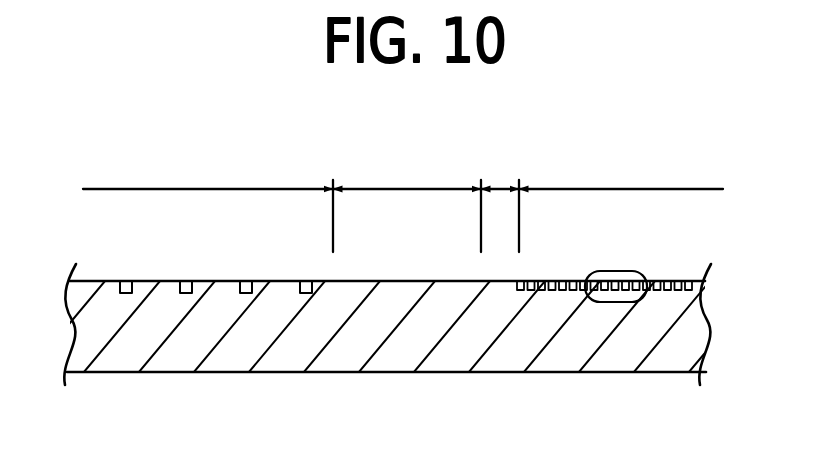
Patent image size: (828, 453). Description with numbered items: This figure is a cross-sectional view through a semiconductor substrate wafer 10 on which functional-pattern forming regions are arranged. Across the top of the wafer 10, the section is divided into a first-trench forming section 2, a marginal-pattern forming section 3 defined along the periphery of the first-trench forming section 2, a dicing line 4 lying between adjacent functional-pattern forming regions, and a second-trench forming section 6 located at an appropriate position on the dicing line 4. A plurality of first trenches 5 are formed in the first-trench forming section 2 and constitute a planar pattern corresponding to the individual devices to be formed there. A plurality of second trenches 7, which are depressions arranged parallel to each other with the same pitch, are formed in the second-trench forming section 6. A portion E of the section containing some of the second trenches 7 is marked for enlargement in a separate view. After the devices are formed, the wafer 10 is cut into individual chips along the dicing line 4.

The first-trench forming section 2 is at (172, 189).
The marginal-pattern forming section 3 is at (373, 189).
The dicing line 4 is at (493, 189).
The first trench 5 is at (183, 281).
The second-trench forming section 6 is at (606, 189).
The second trench 7 is at (655, 281).
The portion E is at (600, 272).
The semiconductor substrate wafer 10 is at (593, 340).